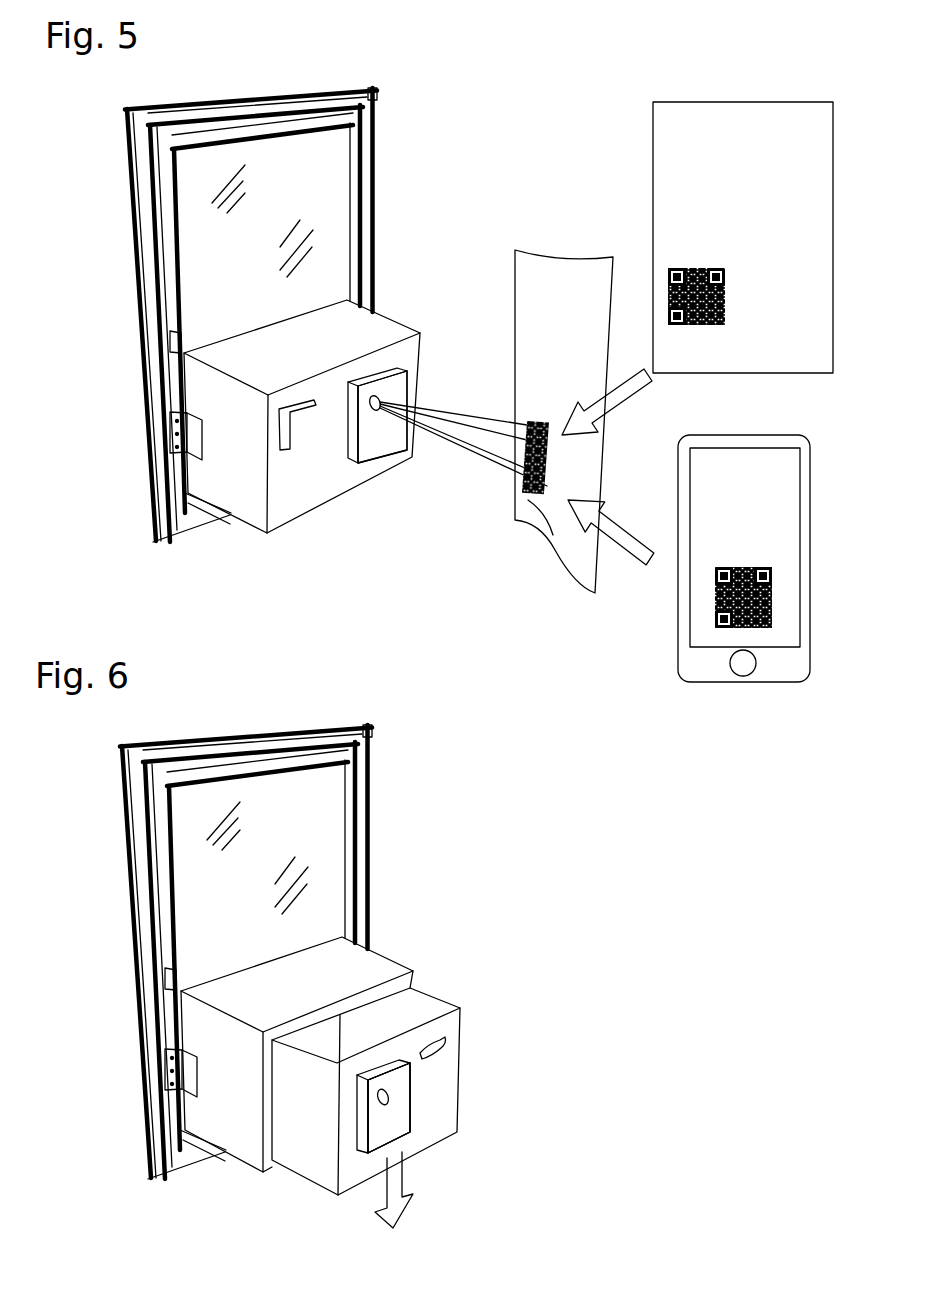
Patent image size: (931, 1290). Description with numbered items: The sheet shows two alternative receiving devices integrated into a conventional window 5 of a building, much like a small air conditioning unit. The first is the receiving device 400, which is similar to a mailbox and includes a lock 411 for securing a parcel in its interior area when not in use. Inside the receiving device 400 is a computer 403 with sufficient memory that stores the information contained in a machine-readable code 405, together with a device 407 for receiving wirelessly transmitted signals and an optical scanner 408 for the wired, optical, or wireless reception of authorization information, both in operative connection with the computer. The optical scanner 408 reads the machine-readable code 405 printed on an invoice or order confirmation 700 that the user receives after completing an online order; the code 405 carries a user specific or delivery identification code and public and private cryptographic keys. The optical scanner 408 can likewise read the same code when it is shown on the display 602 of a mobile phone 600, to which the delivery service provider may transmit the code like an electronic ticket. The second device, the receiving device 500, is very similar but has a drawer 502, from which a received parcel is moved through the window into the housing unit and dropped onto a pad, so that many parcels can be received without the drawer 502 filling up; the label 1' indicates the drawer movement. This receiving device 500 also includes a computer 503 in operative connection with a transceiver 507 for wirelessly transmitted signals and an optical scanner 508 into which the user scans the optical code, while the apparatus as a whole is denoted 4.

In FIG. 5, the window-mounted delivery apparatus 4 is at (233, 57).
In FIG. 5, the receiving device 400 is at (373, 312).
In FIG. 5, the computer 403 is at (380, 433).
In FIG. 5, the device for receiving wirelessly transmitted signals 407 is at (390, 471).
In FIG. 5, the optical scanner 408 is at (383, 397).
In FIG. 5, the lock 411 is at (281, 449).
In FIG. 5, the machine-readable code 405 is at (666, 282).
In FIG. 5, the order confirmation 700 is at (545, 253).
In FIG. 5, the mobile phone 600 is at (707, 664).
In FIG. 5, the display 602 is at (702, 638).
In FIG. 6, the window 5 is at (270, 697).
In FIG. 6, the receiving device 500 is at (372, 967).
In FIG. 6, the drawer 502 is at (437, 1117).
In FIG. 6, the computer 503 is at (387, 1135).
In FIG. 6, the transceiver 507 is at (389, 1108).
In FIG. 6, the optical scanner 508 is at (384, 1085).
In FIG. 6, the drawer opening direction 1' is at (394, 1206).